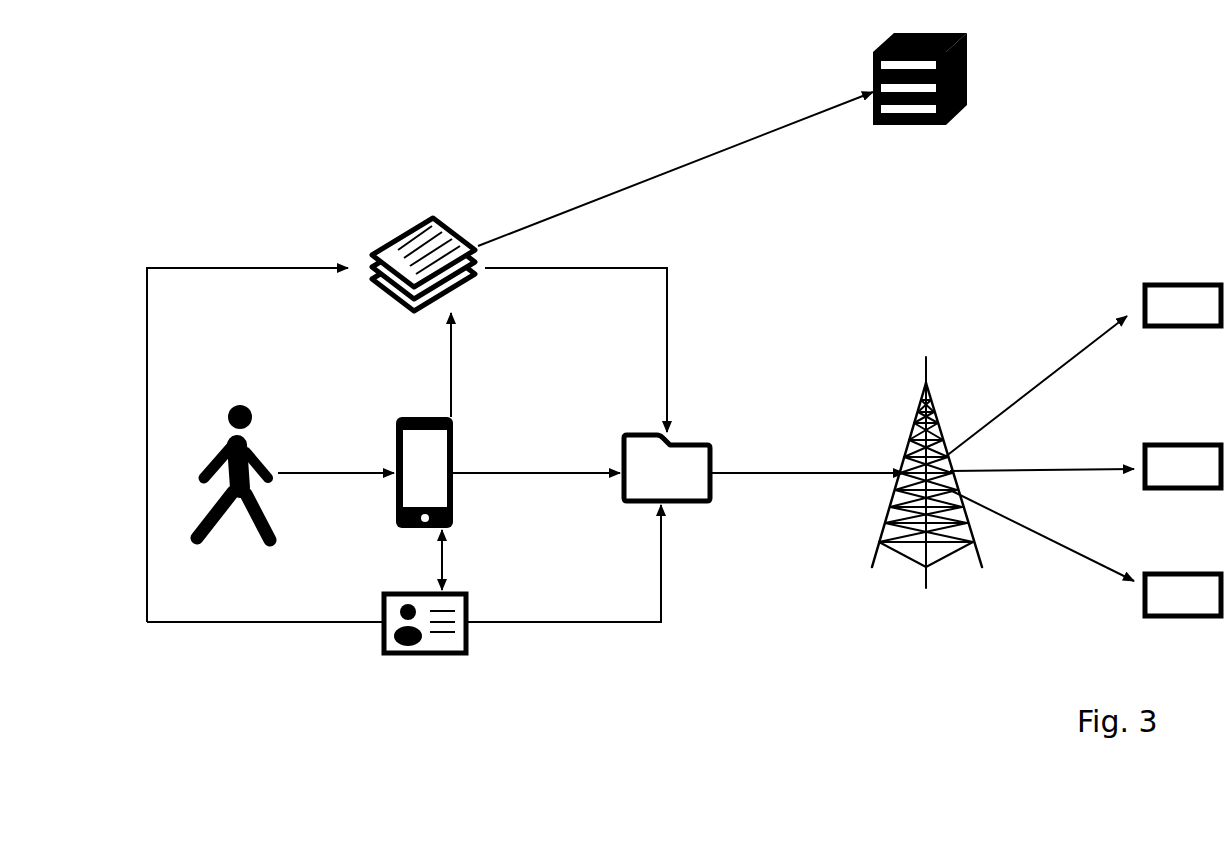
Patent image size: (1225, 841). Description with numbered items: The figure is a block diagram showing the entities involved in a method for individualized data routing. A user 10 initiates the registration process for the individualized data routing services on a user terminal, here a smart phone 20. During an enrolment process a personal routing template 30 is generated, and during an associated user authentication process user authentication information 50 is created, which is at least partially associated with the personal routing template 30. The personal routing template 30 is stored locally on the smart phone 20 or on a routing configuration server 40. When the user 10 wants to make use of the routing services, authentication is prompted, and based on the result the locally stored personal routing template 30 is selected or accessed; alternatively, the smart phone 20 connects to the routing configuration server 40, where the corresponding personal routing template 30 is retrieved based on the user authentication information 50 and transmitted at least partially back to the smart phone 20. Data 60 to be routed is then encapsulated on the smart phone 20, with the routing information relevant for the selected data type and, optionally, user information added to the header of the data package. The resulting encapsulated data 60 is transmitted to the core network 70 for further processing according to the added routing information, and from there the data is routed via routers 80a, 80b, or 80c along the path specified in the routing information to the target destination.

The user 10 is at (233, 493).
The smart phone 20 is at (424, 490).
The personal routing template 30 is at (423, 290).
The routing configuration server 40 is at (920, 97).
The user authentication information 50 is at (425, 646).
The data 60 is at (667, 468).
The core network 70 is at (927, 494).
The router 80a is at (1183, 305).
The router 80b is at (1183, 466).
The router 80c is at (1183, 595).